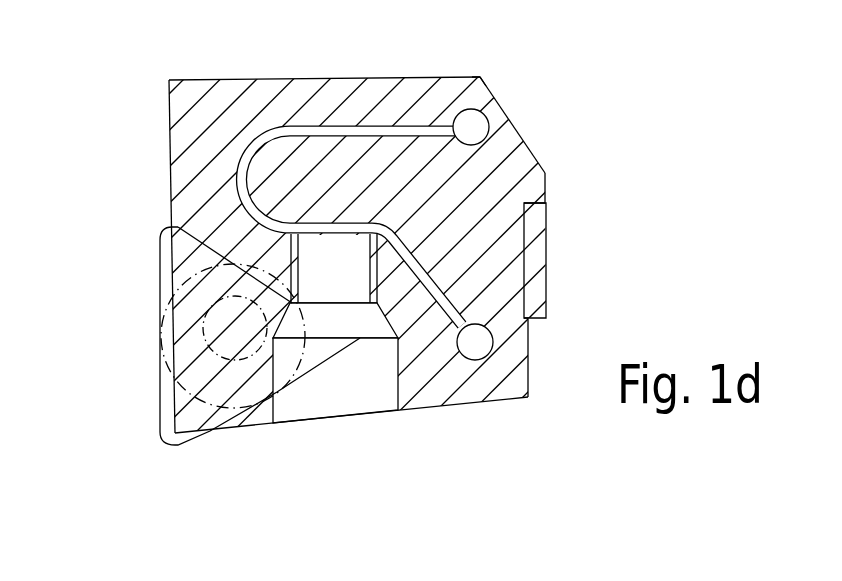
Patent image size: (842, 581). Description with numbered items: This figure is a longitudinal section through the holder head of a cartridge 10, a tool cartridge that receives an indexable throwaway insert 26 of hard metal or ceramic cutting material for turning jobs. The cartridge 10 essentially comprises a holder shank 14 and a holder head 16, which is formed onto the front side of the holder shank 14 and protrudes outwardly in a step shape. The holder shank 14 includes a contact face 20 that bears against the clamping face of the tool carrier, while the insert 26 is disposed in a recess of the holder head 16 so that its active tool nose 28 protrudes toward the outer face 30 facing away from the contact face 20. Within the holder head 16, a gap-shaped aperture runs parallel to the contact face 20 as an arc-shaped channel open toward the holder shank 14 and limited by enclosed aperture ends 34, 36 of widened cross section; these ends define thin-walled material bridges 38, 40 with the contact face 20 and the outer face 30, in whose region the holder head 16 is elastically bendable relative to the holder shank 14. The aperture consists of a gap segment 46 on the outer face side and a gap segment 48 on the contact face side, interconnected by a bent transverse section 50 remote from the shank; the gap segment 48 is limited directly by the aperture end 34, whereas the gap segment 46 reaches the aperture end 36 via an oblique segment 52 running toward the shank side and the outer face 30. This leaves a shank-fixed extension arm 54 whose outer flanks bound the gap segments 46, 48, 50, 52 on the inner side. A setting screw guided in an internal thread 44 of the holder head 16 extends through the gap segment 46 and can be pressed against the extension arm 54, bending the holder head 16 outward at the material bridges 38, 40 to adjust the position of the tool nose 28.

The cartridge 10 is at (190, 165).
The holder shank 14 is at (538, 267).
The holder head 16 is at (203, 117).
The contact face 20 is at (468, 77).
The indexable throwaway insert 26 is at (163, 255).
The tool nose 28 is at (182, 445).
The outer face 30 is at (472, 407).
The aperture end 34 is at (477, 128).
The aperture end 36 is at (483, 343).
The material bridge 38 is at (480, 98).
The material bridge 40 is at (493, 375).
The internal thread 44 is at (330, 303).
The gap segment 46 is at (343, 234).
The gap segment 48 is at (408, 123).
The transverse section 50 is at (236, 158).
The oblique segment 52 is at (437, 280).
The shank-fixed extension arm 54 is at (332, 173).